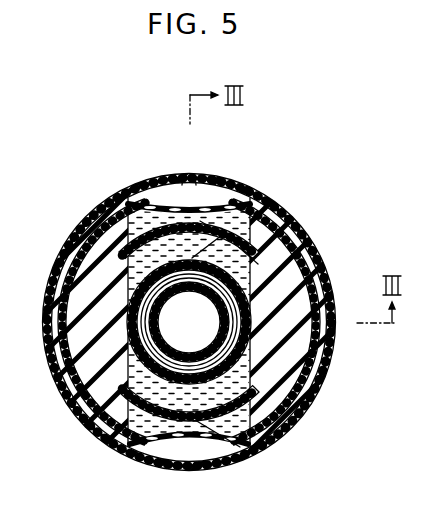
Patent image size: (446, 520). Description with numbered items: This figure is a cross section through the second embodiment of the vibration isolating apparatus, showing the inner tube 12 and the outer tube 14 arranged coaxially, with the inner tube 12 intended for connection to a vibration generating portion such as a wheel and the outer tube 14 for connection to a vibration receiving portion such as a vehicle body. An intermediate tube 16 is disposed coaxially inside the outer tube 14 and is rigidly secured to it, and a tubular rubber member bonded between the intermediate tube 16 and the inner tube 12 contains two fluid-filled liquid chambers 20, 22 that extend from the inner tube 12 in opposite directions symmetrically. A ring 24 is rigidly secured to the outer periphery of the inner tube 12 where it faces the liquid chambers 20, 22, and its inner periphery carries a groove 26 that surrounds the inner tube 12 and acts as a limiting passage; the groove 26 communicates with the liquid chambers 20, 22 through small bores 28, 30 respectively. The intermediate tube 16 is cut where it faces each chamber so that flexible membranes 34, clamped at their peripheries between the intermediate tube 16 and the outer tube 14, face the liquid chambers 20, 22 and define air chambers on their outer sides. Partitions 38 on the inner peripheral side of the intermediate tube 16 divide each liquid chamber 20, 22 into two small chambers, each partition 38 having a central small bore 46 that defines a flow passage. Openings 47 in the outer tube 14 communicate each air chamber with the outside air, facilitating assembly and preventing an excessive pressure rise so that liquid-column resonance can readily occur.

The inner tube 12 is at (191, 291).
The outer tube 14 is at (297, 220).
The intermediate tube 16 is at (325, 293).
The liquid chamber 20 is at (318, 257).
The liquid chamber 22 is at (308, 386).
The ring 24 is at (322, 351).
The groove 26 is at (213, 368).
The small bore 28 is at (247, 204).
The small bore 30 is at (172, 448).
The flexible membrane 34 is at (226, 202).
The partition 38 is at (242, 441).
The small bore 46 is at (183, 226).
The opening 47 is at (193, 176).